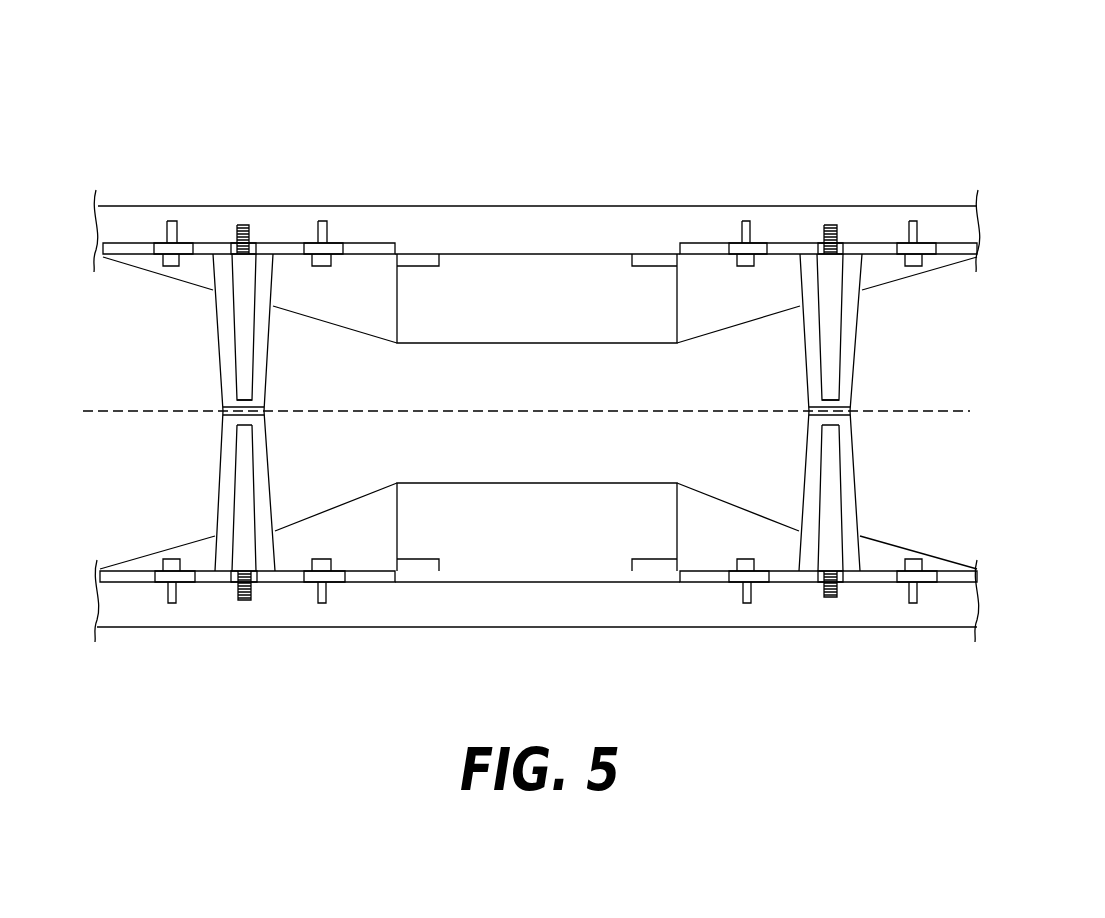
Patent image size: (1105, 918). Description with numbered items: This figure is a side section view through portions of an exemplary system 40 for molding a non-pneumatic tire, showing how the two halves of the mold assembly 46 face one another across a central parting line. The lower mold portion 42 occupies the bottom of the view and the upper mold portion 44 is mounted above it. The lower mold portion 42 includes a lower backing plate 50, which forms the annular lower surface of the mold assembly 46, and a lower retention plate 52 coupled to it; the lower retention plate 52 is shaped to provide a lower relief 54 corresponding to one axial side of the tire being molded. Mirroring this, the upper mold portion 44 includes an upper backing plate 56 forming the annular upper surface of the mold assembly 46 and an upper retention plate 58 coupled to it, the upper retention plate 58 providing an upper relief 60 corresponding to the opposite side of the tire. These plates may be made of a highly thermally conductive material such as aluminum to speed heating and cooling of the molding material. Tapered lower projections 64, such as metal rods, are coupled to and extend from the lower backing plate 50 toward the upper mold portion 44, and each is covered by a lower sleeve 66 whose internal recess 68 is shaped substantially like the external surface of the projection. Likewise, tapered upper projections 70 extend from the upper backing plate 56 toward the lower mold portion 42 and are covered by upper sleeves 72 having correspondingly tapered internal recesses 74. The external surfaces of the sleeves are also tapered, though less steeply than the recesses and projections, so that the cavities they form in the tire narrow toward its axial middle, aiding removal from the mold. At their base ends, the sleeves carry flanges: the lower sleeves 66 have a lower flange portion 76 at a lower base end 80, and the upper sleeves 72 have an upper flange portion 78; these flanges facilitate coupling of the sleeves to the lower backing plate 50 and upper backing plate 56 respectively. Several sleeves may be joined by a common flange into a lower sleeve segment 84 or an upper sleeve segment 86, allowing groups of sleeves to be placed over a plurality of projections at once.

The system for molding non-pneumatic tires 40 is at (827, 85).
The lower mold portion 42 is at (968, 505).
The upper mold portion 44 is at (954, 278).
The mold assembly 46 is at (1000, 343).
The lower backing plate 50 is at (138, 610).
The lower retention plate 52 is at (385, 508).
The lower relief 54 is at (197, 537).
The upper backing plate 56 is at (122, 222).
The upper retention plate 58 is at (368, 266).
The upper relief 60 is at (177, 280).
The lower projection 64 is at (247, 487).
The lower sleeve 66 is at (228, 447).
The internal recess of lower sleeve 68 is at (255, 450).
The upper projection 70 is at (243, 380).
The upper sleeve 72 is at (268, 355).
The internal recess of upper sleeve 74 is at (255, 318).
The lower flange portion 76 is at (217, 582).
The upper flange portion 78 is at (213, 243).
The lower base end 80 is at (267, 273).
The lower sleeve segment 84 is at (267, 537).
The upper sleeve segment 86 is at (227, 353).